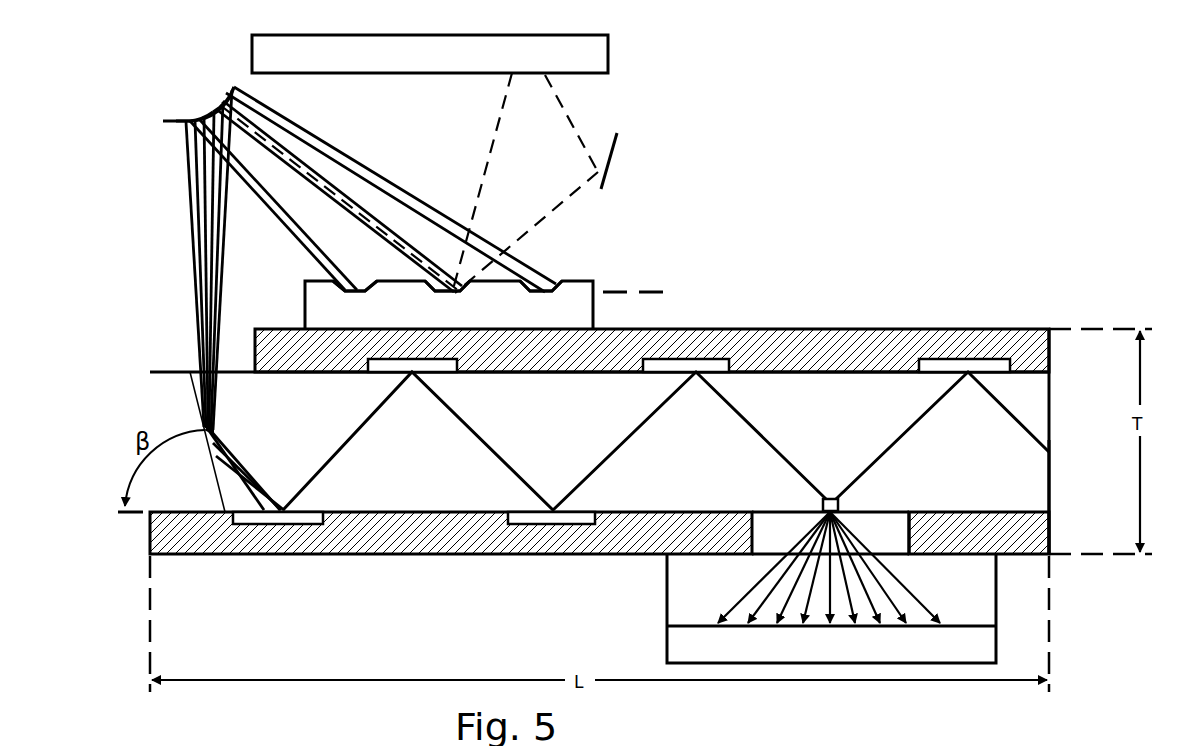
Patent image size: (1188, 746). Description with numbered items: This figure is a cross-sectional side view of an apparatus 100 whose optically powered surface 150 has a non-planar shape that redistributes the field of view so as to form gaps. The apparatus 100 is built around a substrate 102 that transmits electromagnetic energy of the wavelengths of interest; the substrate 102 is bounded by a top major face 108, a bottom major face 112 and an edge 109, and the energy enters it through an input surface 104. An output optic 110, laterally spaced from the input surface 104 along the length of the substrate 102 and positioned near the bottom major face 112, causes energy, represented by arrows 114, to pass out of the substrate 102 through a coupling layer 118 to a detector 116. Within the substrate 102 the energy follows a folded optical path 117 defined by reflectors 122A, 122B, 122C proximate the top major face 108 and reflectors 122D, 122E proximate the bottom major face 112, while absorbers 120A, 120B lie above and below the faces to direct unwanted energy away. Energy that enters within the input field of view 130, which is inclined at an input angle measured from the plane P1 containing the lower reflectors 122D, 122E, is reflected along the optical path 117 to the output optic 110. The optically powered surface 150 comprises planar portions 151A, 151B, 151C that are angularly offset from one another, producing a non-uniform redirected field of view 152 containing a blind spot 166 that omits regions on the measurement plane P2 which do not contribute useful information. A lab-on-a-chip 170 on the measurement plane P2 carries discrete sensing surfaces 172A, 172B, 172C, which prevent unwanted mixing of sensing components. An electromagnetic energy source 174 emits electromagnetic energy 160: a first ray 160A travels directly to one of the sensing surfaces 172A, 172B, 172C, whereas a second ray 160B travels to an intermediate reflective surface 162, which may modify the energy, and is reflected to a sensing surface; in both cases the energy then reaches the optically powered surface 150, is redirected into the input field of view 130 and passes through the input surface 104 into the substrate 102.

The apparatus 100 is at (777, 266).
The substrate 102 is at (1027, 401).
The input surface 104 is at (256, 375).
The top major face 108 is at (538, 373).
The edge 109 is at (1050, 487).
The output optic 110 is at (828, 497).
The bottom major face 112 is at (963, 510).
The arrows 114 is at (912, 598).
The detector 116 is at (667, 630).
The optical path 117 is at (348, 440).
The coupling layer 118 is at (667, 578).
The absorber 120A is at (868, 328).
The absorber 120B is at (218, 555).
The reflector 122A is at (438, 373).
The reflector 122B is at (745, 373).
The reflector 122C is at (965, 358).
The reflector 122D is at (275, 525).
The reflector 122E is at (540, 525).
The input field of view 130 is at (202, 278).
The optically powered surface 150 is at (173, 123).
The planar portion 151A is at (182, 120).
The planar portion 151B is at (202, 119).
The planar portion 151C is at (235, 85).
The redirected field of view 152 is at (338, 167).
The electromagnetic energy 160 is at (255, 148).
The first ray 160A is at (495, 142).
The second ray 160B is at (575, 125).
The intermediate reflective surface 162 is at (610, 163).
The blind spot 166 is at (325, 234).
The lab-on-a-chip 170 is at (305, 307).
The discrete sensing surface 172A is at (353, 291).
The discrete sensing surface 172B is at (452, 293).
The discrete sensing surface 172C is at (543, 285).
The electromagnetic energy source 174 is at (609, 52).
The plane P1 is at (107, 513).
The measurement plane P2 is at (650, 292).